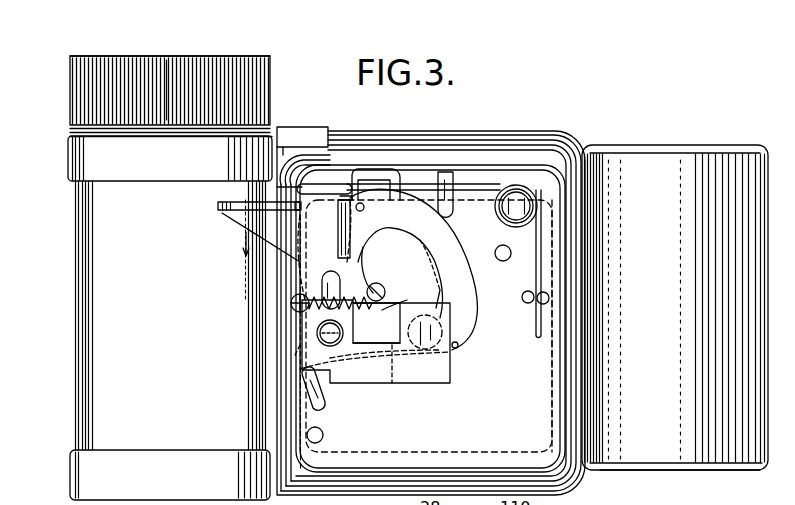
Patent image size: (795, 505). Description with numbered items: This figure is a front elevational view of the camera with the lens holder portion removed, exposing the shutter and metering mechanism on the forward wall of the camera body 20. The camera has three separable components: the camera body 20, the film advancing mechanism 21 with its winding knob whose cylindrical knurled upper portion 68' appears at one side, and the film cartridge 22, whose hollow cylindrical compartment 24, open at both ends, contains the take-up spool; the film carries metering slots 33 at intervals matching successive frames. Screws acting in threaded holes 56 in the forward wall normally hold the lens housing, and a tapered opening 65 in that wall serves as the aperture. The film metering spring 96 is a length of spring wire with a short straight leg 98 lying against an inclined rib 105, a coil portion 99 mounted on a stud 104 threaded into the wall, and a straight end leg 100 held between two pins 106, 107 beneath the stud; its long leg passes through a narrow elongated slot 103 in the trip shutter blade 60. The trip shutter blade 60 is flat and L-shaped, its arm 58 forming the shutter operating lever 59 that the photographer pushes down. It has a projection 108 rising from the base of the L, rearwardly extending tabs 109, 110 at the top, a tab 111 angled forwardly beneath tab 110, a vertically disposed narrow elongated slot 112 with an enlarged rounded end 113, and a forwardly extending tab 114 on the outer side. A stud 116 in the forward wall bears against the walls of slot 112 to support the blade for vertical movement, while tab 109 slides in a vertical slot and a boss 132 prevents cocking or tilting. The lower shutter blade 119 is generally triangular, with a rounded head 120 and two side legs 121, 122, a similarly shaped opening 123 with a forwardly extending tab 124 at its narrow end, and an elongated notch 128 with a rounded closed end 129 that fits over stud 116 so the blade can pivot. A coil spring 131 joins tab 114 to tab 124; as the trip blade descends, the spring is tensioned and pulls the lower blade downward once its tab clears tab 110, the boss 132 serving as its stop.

The camera body 20 is at (572, 408).
The film advancing mechanism 21 is at (59, 98).
The film cartridge 22 is at (694, 488).
The hollow cylindrical compartment 24 is at (95, 368).
The metering slots 33 is at (352, 195).
The threaded holes 56 is at (500, 258).
The arm 58 is at (245, 214).
The shutter operating lever 59 is at (235, 203).
The trip shutter blade 60 is at (431, 399).
The tapered opening 65 is at (475, 312).
The cylindrical knurled upper portion 68' is at (170, 75).
The film metering spring 96 is at (507, 157).
The short straight leg 98 is at (440, 178).
The coil portion 99 is at (548, 190).
The straight end leg 100 is at (545, 263).
The narrow elongated slot 103 is at (325, 185).
The stud 104 is at (512, 210).
The inclined rib 105 is at (460, 180).
The pin 106 is at (526, 305).
The pin 107 is at (550, 300).
The projection 108 is at (447, 302).
The tab 109 is at (290, 150).
The tab 110 is at (360, 188).
The tab 111 is at (350, 222).
The vertically disposed narrow elongated slot 112 is at (338, 282).
The enlarged rounded end 113 is at (345, 362).
The forwardly extending tab 114 is at (292, 303).
The stud 116 is at (320, 340).
The lower shutter blade 119 is at (468, 347).
The rounded head 120 is at (462, 278).
The side leg 121 is at (392, 370).
The side leg 122 is at (388, 232).
The opening 123 is at (422, 247).
The forwardly extending tab 124 is at (407, 300).
The elongated notch 128 is at (300, 369).
The rounded closed end 129 is at (349, 325).
The coil spring 131 is at (385, 296).
The boss 132 is at (322, 403).